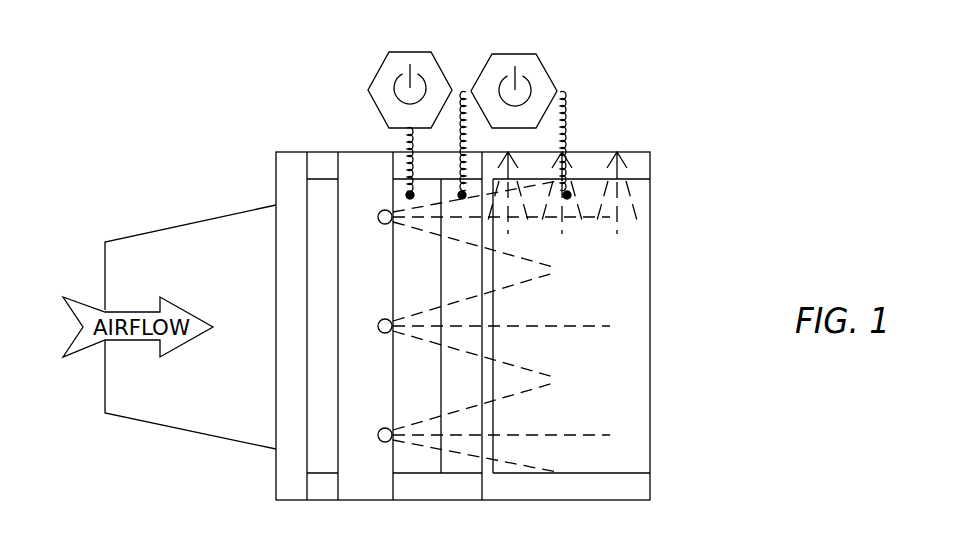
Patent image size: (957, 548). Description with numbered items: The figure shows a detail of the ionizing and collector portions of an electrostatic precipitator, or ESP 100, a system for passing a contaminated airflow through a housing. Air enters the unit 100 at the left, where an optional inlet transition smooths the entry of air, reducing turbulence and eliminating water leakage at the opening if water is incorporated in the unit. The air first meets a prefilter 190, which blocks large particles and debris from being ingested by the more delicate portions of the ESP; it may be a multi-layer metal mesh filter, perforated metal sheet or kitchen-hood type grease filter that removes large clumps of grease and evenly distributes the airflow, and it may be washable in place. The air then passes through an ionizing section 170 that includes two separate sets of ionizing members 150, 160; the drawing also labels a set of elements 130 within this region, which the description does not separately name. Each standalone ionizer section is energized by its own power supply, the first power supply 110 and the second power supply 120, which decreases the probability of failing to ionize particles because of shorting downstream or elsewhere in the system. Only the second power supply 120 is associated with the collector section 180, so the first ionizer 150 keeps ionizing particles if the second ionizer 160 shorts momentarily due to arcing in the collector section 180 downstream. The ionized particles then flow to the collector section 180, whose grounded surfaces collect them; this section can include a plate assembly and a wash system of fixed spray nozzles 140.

The electrostatic precipitator (ESP) system 100 is at (742, 197).
The first power supply 110 is at (383, 66).
The second power supply 120 is at (547, 70).
The spray nozzles 130 is at (378, 433).
The fixed spray nozzles 140 is at (508, 152).
The first ionizing member 150 is at (410, 265).
The second ionizing member 160 is at (460, 383).
The ionizing section 170 is at (404, 455).
The collector section 180 is at (632, 418).
The prefilter 190 is at (320, 322).